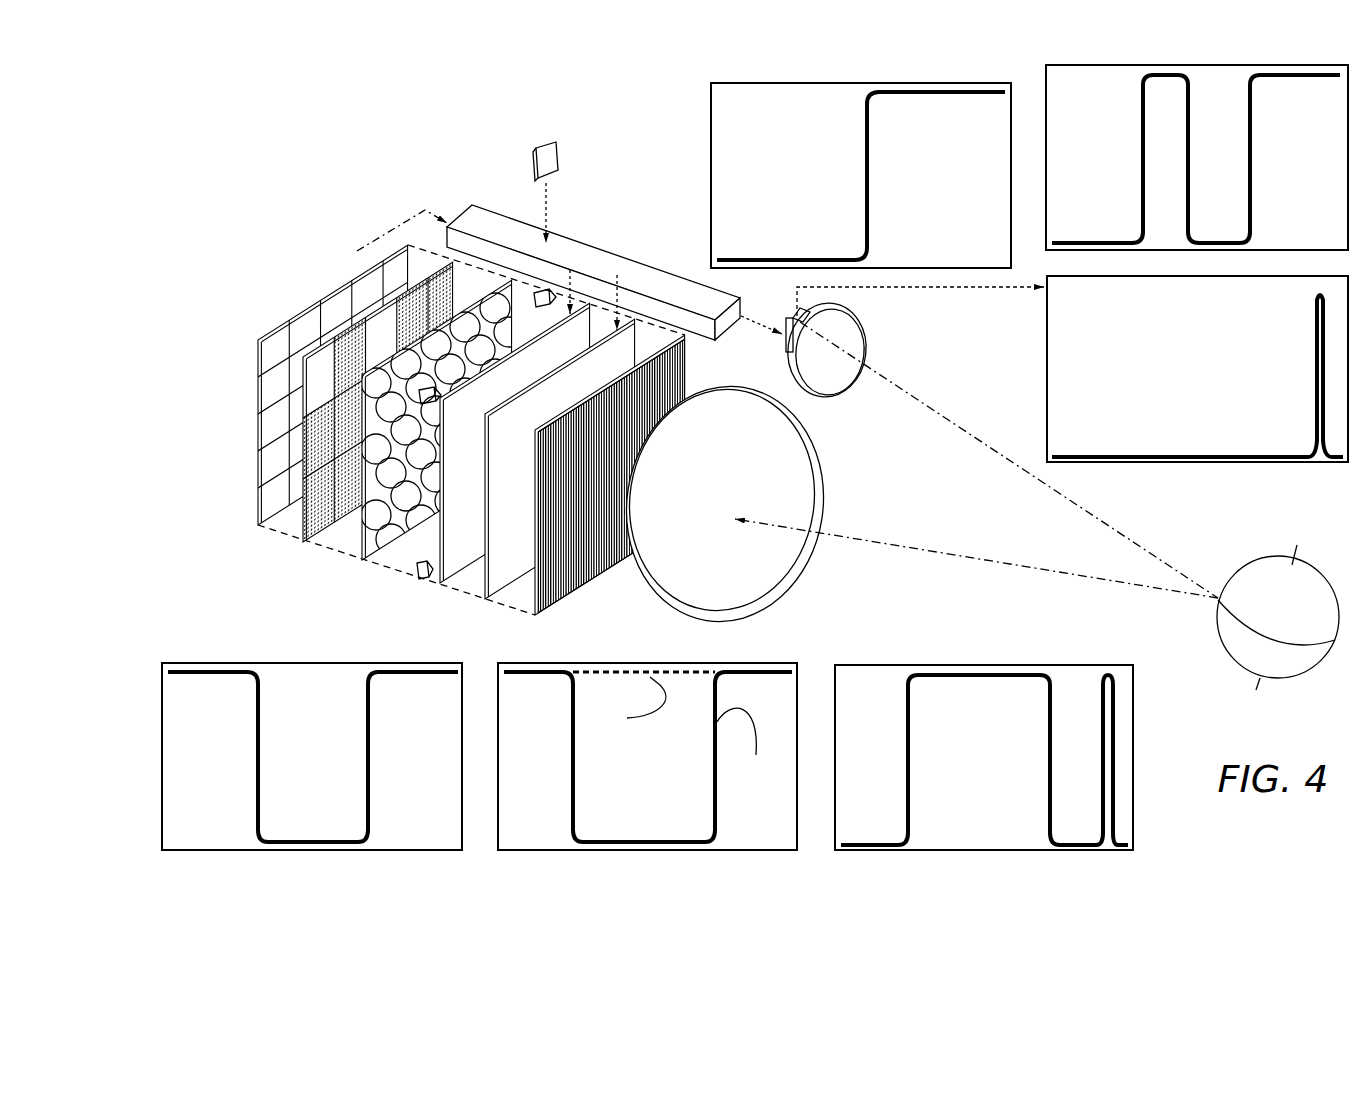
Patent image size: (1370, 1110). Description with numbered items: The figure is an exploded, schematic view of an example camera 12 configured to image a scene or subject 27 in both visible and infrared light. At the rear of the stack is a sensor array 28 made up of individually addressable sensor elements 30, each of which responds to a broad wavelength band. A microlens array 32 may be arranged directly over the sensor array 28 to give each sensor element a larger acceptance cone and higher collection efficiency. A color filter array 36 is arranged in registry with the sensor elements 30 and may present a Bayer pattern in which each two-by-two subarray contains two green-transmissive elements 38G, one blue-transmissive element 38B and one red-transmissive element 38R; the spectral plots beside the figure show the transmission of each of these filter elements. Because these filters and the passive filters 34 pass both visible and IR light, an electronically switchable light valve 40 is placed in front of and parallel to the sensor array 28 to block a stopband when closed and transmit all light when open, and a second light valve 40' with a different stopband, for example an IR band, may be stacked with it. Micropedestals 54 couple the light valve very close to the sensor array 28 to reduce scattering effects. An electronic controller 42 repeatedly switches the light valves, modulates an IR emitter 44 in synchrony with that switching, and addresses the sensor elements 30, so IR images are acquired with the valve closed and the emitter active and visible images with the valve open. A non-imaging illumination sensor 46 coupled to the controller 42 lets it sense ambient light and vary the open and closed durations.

The camera 12 is at (232, 260).
The scene or subject 27 is at (1297, 625).
The sensor array 28 is at (257, 432).
The sensor elements 30 is at (285, 400).
The microlens array 32 is at (383, 565).
The passive filters 34 is at (593, 543).
The color filter array 36 is at (300, 518).
The red-transmissive element 38R is at (707, 105).
The green-transmissive elements 38G is at (1020, 63).
The blue-transmissive element 38B is at (352, 515).
The electronically switchable light valve 40 is at (631, 594).
The second light valve 40' is at (515, 443).
The electronic controller 42 is at (527, 243).
The IR emitter 44 is at (786, 324).
The non-imaging illumination sensor 46 is at (560, 150).
The micropedestals 54 is at (545, 332).